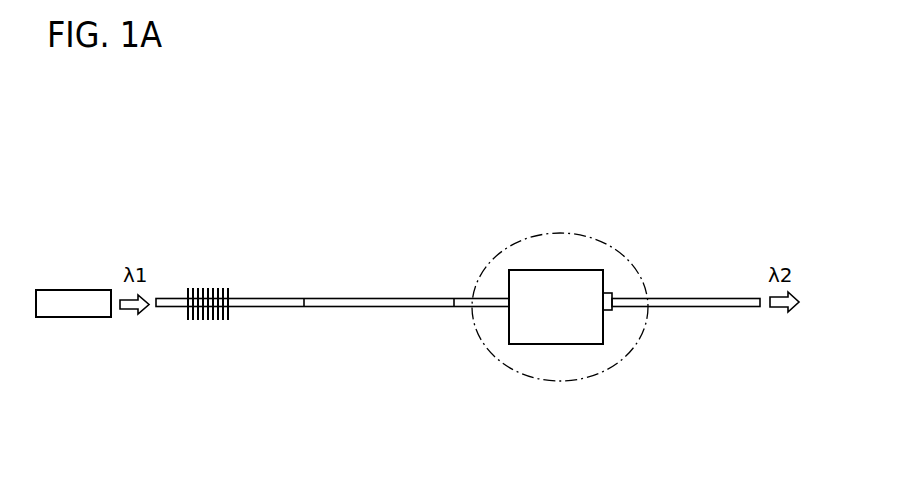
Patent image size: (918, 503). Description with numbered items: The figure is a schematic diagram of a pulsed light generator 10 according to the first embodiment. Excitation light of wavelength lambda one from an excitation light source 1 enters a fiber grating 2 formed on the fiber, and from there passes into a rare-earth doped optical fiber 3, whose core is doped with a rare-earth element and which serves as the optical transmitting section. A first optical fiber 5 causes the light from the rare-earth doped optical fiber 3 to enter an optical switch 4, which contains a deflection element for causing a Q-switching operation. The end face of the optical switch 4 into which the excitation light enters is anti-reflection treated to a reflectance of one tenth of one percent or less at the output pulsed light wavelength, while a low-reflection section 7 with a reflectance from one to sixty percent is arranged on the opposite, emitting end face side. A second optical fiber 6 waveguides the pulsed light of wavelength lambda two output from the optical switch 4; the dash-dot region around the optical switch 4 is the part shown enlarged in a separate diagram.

The excitation light source 1 is at (75, 310).
The fiber grating 2 is at (248, 303).
The rare-earth doped optical fiber 3 is at (380, 305).
The optical switch 4 is at (558, 278).
The first optical fiber 5 is at (462, 305).
The second optical fiber 6 is at (700, 297).
The low-reflection section 7 is at (607, 293).
The pulsed light generator 10 is at (689, 196).